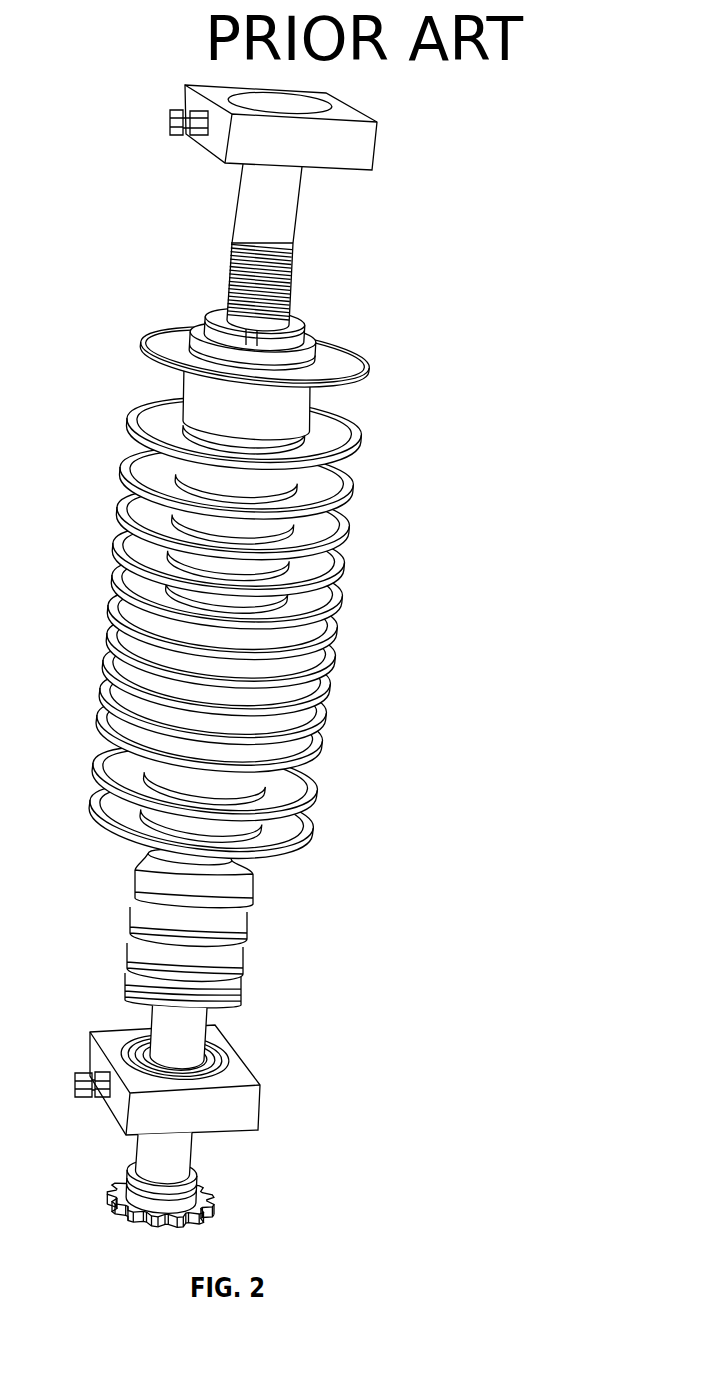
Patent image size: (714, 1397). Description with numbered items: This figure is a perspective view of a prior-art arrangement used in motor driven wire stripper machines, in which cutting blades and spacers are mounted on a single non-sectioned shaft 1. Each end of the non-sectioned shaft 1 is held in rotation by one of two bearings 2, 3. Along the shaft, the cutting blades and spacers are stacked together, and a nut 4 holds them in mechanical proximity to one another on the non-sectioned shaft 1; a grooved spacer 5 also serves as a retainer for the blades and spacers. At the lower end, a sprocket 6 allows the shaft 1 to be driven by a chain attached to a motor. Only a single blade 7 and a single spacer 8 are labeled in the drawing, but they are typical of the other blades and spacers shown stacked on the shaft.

The non-sectioned shaft 1 is at (257, 205).
The bearing 2 is at (252, 1116).
The bearing 3 is at (362, 144).
The nut 4 is at (213, 322).
The grooved spacer 5 is at (238, 927).
The sprocket 6 is at (110, 1197).
The blade 7 is at (143, 347).
The spacer 8 is at (197, 397).